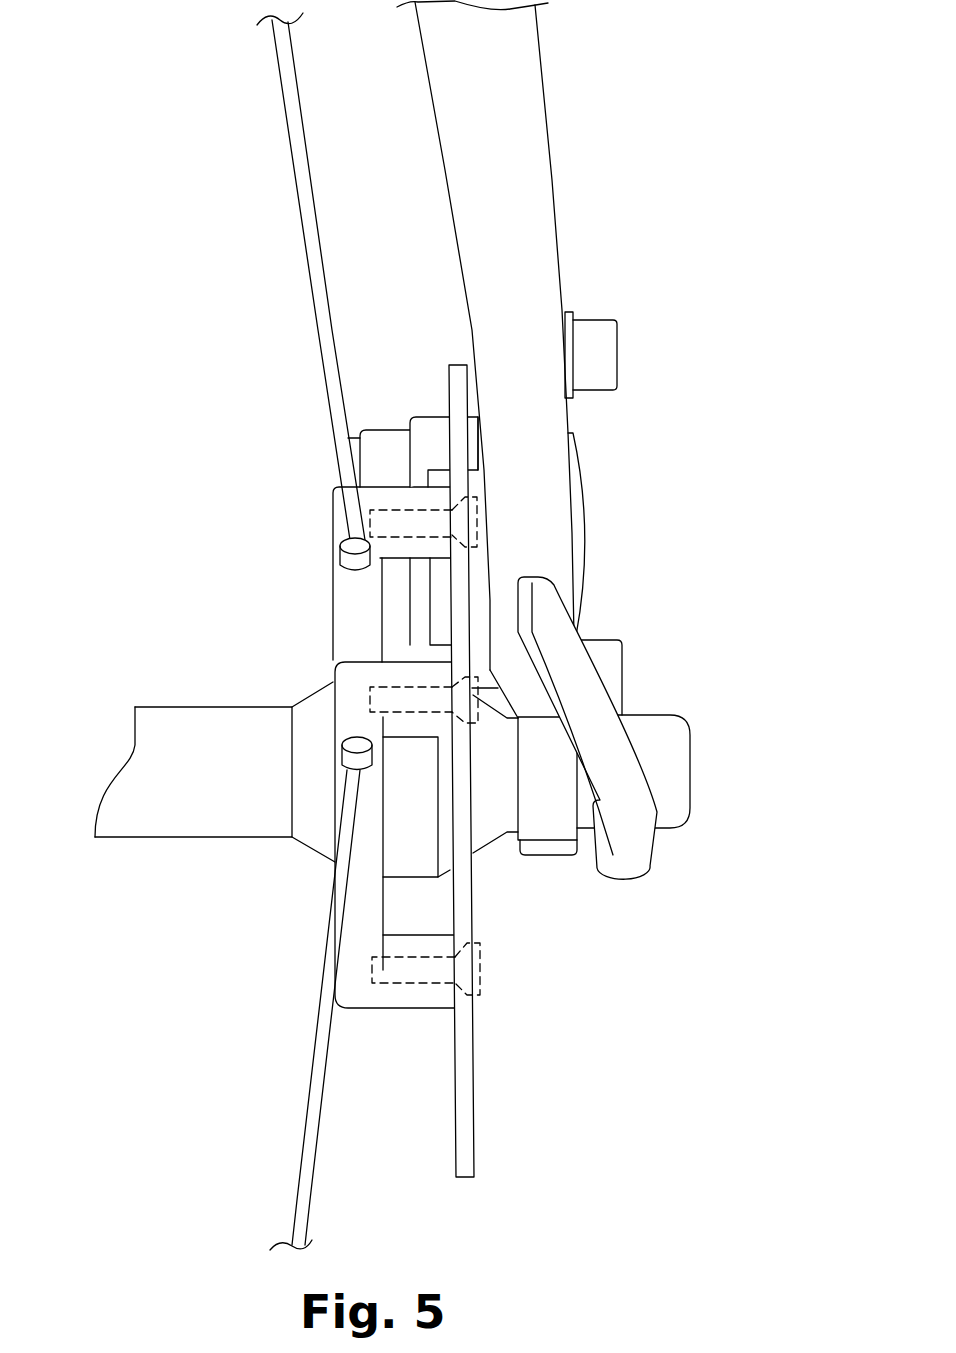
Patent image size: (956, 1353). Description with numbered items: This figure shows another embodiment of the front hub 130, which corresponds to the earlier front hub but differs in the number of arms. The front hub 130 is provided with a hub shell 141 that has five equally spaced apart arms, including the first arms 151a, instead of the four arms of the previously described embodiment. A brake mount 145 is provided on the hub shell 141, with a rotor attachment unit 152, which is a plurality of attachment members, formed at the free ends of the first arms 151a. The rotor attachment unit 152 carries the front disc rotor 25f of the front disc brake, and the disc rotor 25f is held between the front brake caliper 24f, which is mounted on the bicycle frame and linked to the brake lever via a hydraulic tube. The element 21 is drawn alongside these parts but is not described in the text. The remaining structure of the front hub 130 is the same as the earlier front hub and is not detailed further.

The frame tube 21 is at (525, 205).
The brake caliper 24f is at (422, 452).
The disc rotor 25f is at (467, 1135).
The front hub 130 is at (170, 680).
The hub shell 141 is at (138, 820).
The brake mount 145 is at (398, 988).
The first arm 151a is at (373, 893).
The rotor attachment unit 152 is at (425, 997).